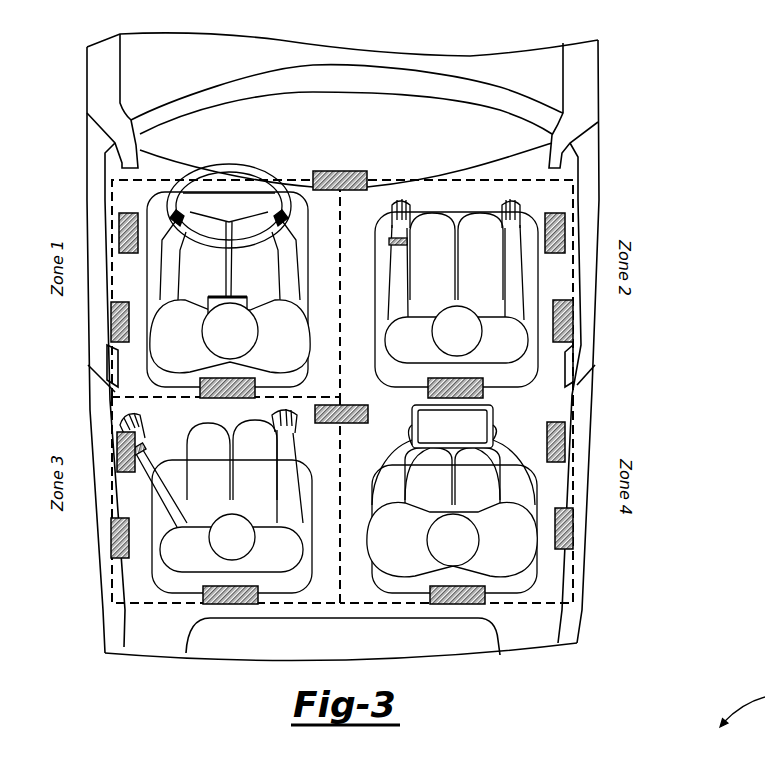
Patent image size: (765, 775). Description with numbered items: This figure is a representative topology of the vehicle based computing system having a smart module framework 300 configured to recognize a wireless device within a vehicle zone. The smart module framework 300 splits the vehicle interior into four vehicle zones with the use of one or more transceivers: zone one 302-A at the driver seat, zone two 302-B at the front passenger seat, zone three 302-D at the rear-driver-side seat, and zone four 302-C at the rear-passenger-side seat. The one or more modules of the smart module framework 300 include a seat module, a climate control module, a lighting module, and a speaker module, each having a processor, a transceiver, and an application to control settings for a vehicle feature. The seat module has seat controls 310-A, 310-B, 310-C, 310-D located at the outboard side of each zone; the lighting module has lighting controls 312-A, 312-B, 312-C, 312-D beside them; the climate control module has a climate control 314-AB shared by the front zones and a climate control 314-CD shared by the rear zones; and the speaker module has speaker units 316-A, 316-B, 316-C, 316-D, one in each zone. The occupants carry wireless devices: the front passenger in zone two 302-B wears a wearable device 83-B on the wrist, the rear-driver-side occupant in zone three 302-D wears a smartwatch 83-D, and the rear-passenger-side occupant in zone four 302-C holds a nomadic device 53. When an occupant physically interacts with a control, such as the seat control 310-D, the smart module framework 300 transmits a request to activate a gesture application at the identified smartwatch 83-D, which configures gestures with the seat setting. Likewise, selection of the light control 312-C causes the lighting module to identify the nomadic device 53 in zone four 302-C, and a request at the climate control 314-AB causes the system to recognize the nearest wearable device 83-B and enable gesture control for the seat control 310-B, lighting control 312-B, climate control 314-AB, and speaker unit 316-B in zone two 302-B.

The smart module framework 300 is at (657, 43).
The zone 1 302-A is at (143, 177).
The zone 2 302-B is at (540, 177).
The zone 4 302-C is at (575, 592).
The zone 3 302-D is at (110, 598).
The seat control 310-A is at (119, 233).
The seat control 310-B is at (565, 233).
The seat control 310-C is at (565, 452).
The seat control 310-D is at (118, 452).
The lighting control 312-A is at (111, 323).
The lighting control 312-B is at (573, 322).
The light control 312-C is at (573, 540).
The lighting control 312-D is at (111, 545).
The climate control 314-AB is at (337, 170).
The climate control 314-CD is at (343, 424).
The speaker unit 316-A is at (217, 399).
The speaker unit 316-B is at (469, 399).
The speaker unit 316-C is at (457, 605).
The speaker unit 316-D is at (227, 605).
The wearable device 83-B is at (398, 238).
The smartwatch 83-D is at (128, 440).
The nomadic device 53 is at (462, 438).